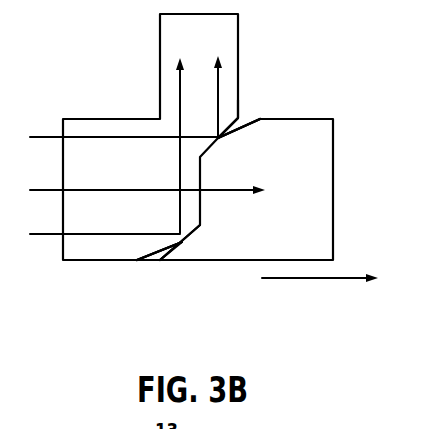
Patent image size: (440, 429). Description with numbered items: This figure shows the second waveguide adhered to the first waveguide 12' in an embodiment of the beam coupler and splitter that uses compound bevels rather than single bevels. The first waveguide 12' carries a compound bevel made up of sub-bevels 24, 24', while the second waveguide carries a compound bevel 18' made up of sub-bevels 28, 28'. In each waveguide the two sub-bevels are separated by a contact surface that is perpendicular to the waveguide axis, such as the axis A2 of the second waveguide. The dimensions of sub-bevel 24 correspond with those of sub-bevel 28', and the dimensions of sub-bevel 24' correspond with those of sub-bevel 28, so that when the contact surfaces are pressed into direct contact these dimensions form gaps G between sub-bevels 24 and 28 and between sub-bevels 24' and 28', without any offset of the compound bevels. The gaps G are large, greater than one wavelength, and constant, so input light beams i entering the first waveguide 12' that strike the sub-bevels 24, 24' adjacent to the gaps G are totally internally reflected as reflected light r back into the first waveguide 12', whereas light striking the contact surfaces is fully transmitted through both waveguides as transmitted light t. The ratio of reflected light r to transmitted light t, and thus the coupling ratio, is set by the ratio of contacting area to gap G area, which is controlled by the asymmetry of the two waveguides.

The first waveguide 12' is at (150, 137).
The sub-bevel 24 is at (241, 90).
The sub-bevel 24' is at (123, 257).
The sub-bevel 28 is at (295, 139).
The sub-bevel 28' is at (191, 277).
The compound bevel 18' is at (171, 304).
The gap G is at (256, 108).
The axis A2 is at (310, 278).
The reflected light r is at (192, 144).
The input light beams i is at (137, 187).
The transmitted light t is at (232, 181).